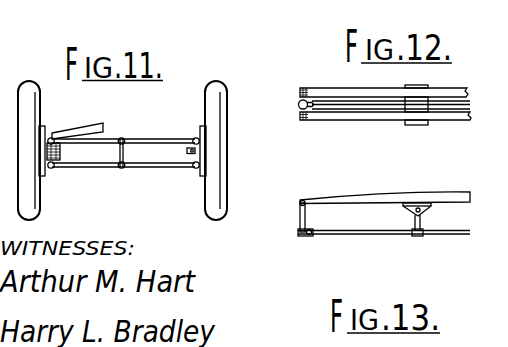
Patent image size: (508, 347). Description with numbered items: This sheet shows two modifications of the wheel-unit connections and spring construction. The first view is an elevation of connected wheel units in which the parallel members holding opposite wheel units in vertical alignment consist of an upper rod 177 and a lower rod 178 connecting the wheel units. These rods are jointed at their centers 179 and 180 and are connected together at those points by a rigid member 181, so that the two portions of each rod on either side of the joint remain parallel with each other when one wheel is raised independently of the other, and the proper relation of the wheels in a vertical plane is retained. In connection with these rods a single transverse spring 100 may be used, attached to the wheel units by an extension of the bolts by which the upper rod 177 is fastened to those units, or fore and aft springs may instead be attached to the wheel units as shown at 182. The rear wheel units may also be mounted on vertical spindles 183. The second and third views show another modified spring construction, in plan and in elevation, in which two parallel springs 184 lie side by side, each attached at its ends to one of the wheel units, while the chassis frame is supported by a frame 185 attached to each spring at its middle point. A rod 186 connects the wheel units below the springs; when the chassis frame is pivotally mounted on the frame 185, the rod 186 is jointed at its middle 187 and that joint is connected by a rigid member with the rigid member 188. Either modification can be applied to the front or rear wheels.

In FIG. 11, the transverse spring 100 is at (79, 128).
In FIG. 11, the rod 177 is at (83, 143).
In FIG. 11, the rod 178 is at (109, 167).
In FIG. 11, the joint 179 is at (123, 139).
In FIG. 11, the joint 180 is at (123, 167).
In FIG. 11, the rigid member 181 is at (125, 153).
In FIG. 11, the fore and aft spring attachment 182 is at (190, 123).
In FIG. 11, the vertical spindle 183 is at (60, 144).
In FIG. 12, the parallel spring 184 is at (348, 88).
In FIG. 13, the parallel spring 184 is at (338, 194).
In FIG. 12, the frame 185 is at (424, 125).
In FIG. 13, the frame 185 is at (431, 208).
In FIG. 13, the rod 186 is at (363, 234).
In FIG. 13, the joint 187 is at (422, 236).
In FIG. 13, the rigid member 188 is at (414, 221).